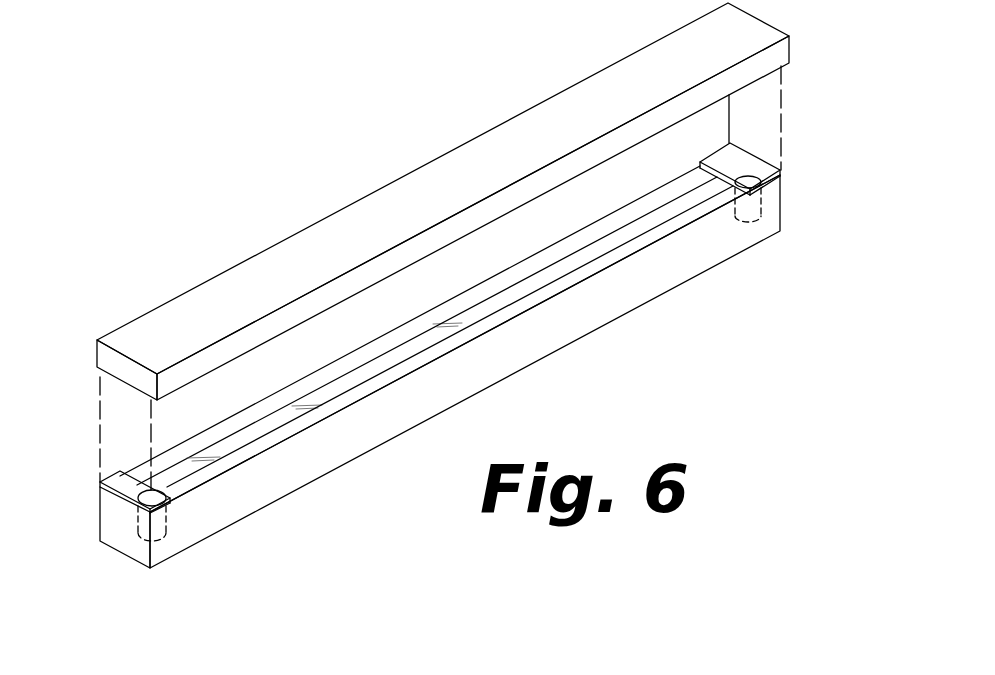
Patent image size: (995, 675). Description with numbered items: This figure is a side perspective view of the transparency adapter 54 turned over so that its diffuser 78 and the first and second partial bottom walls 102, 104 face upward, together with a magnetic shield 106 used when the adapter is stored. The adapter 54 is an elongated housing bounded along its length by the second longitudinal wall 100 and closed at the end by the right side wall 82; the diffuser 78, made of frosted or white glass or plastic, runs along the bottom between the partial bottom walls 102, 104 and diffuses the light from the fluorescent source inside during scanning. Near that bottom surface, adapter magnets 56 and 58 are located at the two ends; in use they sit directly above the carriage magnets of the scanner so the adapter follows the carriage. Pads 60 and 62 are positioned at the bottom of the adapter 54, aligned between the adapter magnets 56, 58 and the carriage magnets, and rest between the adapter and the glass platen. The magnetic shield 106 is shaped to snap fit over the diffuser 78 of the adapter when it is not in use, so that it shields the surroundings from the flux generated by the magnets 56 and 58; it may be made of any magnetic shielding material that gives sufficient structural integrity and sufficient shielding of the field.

The transparency adapter 54 is at (733, 279).
The adapter magnet 56 is at (136, 548).
The adapter magnet 58 is at (760, 208).
The pad 60 is at (123, 481).
The pad 62 is at (741, 162).
The diffuser 78 is at (636, 230).
The right side wall 82 is at (112, 518).
The second longitudinal wall 100 is at (345, 443).
The first partial bottom wall 102 is at (287, 394).
The second partial bottom wall 104 is at (213, 478).
The magnetic shield 106 is at (647, 72).